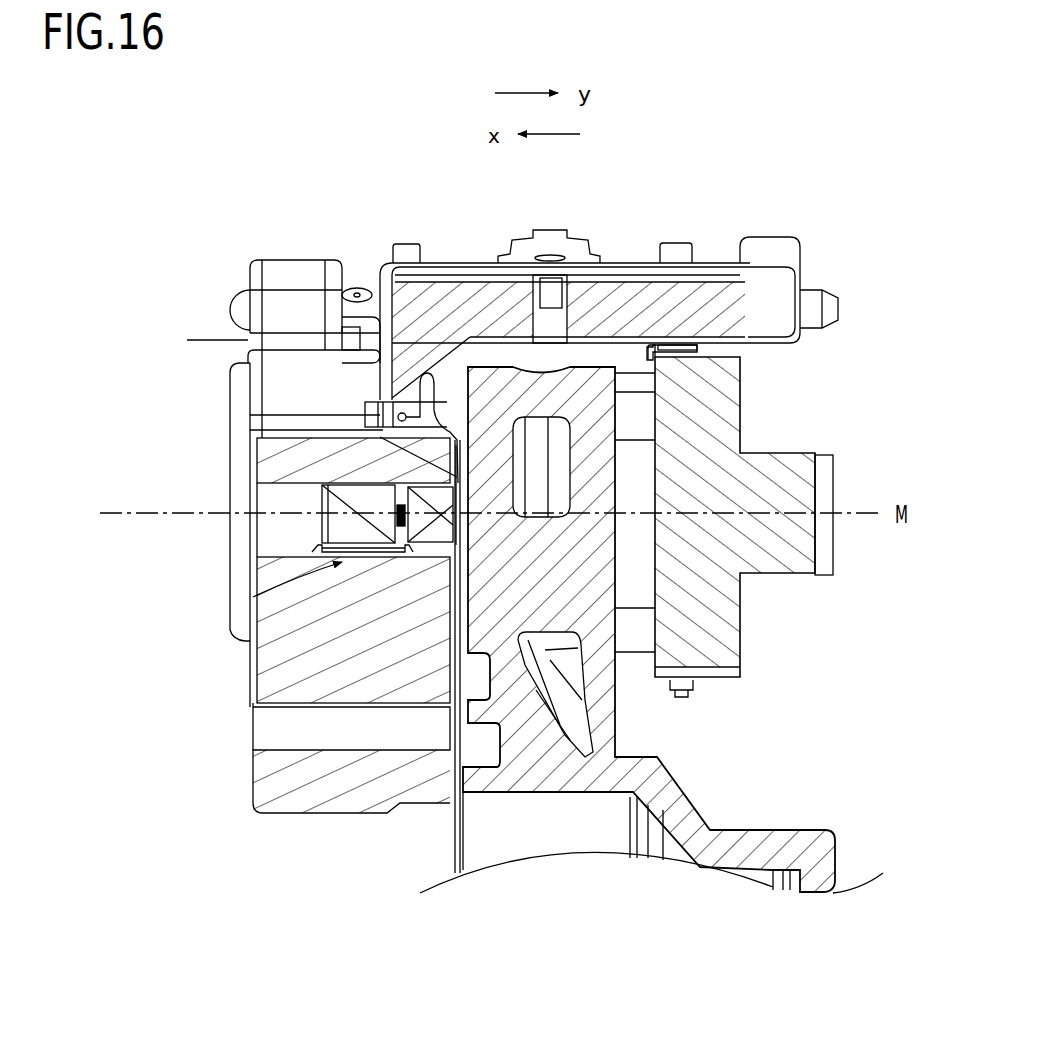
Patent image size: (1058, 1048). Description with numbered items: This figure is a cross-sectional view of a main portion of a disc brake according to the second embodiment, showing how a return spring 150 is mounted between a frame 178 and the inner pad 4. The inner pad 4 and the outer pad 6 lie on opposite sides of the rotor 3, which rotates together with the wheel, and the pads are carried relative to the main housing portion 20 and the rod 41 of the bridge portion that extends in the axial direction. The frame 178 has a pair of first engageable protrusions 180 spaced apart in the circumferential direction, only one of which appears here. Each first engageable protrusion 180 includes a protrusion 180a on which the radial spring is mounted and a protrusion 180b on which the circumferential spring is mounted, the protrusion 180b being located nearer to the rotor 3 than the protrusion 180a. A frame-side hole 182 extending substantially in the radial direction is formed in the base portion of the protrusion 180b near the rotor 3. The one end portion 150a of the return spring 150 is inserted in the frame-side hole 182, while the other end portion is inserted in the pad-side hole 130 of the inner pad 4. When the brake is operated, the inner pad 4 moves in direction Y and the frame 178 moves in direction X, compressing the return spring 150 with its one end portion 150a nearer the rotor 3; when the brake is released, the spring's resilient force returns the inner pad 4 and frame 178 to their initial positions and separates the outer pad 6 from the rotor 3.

The rotor 3 is at (813, 830).
The inner pad 4 is at (460, 355).
The outer pad 6 is at (638, 354).
The main housing portion 20 is at (283, 276).
The rod 41 is at (712, 292).
The pad-side hole 130 is at (373, 413).
The return spring 150 is at (423, 355).
The one end portion 150a is at (400, 512).
The frame 178 is at (797, 548).
The first engageable protrusion 180 is at (423, 527).
The protrusion 180a is at (337, 503).
The protrusion 180b is at (240, 637).
The frame-side hole 182 is at (470, 430).